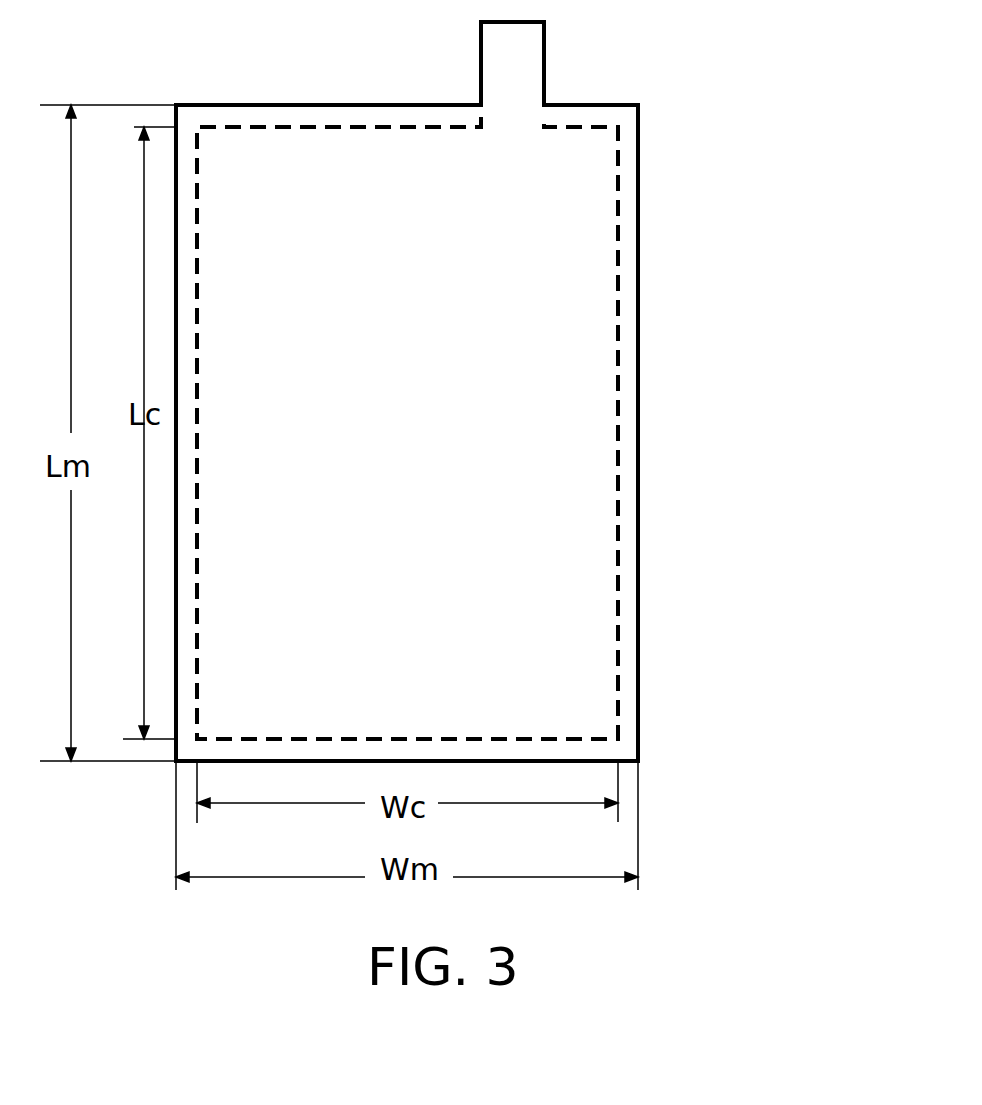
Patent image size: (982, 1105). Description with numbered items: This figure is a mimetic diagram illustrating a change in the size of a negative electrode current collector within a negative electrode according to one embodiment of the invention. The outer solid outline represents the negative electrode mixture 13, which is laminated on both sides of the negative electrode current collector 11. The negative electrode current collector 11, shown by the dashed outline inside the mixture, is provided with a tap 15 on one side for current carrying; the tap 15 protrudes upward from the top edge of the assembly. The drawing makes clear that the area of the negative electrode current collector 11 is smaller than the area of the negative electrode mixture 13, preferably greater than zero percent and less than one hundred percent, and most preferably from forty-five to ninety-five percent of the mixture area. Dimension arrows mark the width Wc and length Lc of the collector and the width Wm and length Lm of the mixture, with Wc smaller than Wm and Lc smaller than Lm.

The negative electrode current collector 11 is at (618, 302).
The negative electrode mixture 13 is at (639, 177).
The tap 15 is at (545, 53).